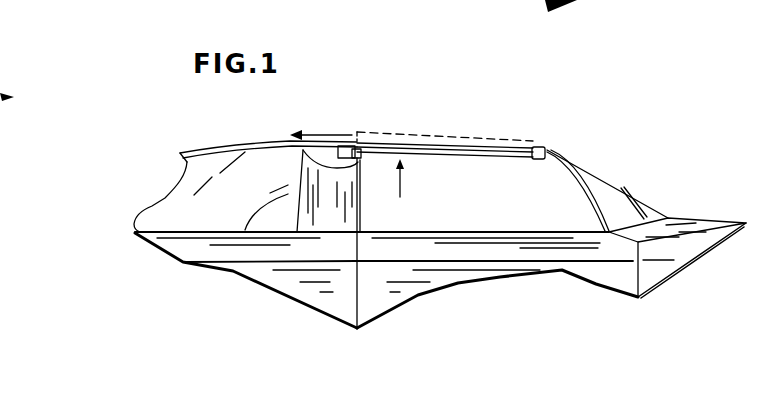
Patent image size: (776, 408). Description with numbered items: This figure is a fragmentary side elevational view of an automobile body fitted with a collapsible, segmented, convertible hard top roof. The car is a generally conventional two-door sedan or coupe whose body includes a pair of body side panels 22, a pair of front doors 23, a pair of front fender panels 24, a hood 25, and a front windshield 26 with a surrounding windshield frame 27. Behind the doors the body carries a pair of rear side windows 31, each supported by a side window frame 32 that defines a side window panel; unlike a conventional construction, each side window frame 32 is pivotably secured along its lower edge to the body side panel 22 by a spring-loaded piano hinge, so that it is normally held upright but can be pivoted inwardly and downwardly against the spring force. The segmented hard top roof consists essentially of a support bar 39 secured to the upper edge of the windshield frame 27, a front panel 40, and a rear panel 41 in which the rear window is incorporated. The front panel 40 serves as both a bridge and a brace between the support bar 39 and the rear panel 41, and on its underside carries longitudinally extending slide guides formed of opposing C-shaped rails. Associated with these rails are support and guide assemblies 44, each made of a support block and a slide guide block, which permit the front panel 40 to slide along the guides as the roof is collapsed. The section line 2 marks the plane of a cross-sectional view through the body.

The section line 2- 2 is at (342, 99).
The body side panel 22 is at (255, 253).
The front door 23 is at (507, 270).
The front fender panel 24 is at (650, 271).
The hood 25 is at (712, 231).
The front windshield 26 is at (644, 195).
The windshield frame 27 is at (607, 181).
The rear side window 31 is at (190, 218).
The side window frame 32 is at (297, 205).
The support bar 39 is at (542, 146).
The front panel 40 is at (410, 137).
The rear panel 41 is at (247, 146).
The support and guide assembly 44 is at (363, 167).